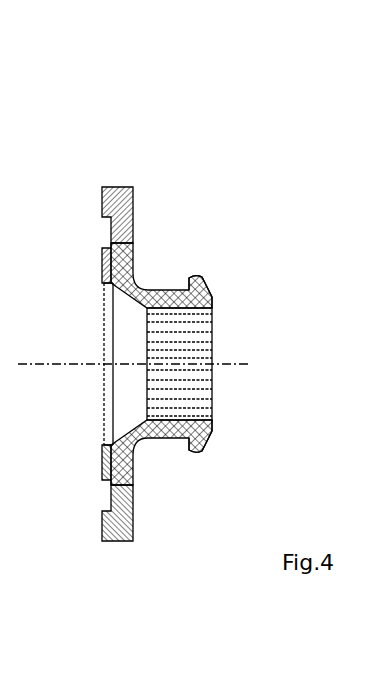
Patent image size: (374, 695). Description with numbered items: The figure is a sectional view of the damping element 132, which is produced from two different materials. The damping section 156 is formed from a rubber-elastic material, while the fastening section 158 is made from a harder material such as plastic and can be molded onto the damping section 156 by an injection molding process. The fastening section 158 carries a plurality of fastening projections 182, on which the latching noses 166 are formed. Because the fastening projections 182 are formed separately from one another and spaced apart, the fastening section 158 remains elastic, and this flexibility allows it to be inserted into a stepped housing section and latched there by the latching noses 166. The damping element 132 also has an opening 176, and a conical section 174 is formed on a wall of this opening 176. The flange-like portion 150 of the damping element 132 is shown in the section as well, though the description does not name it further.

The damping element 132 is at (151, 200).
The flange 150 is at (99, 356).
The damping section 156 is at (161, 288).
The fastening section 158 is at (266, 360).
The latching noses 166 is at (244, 358).
The conical section 174 is at (77, 364).
The opening 176 is at (69, 364).
The fastening projections 182 is at (246, 361).